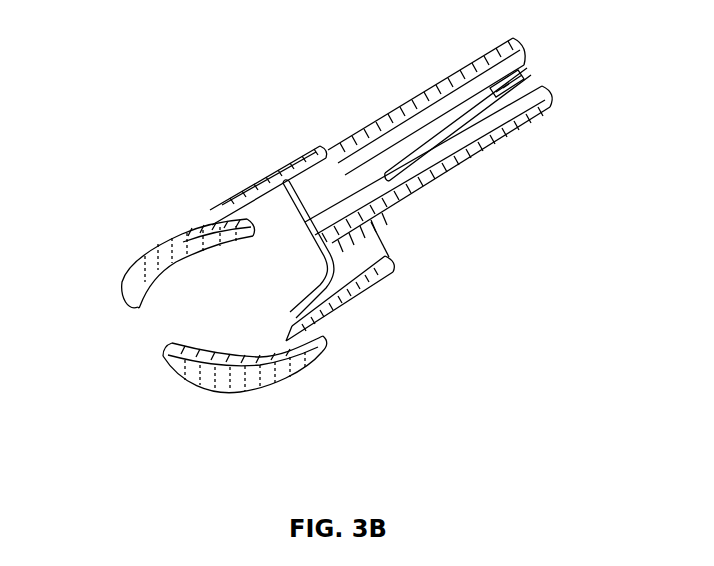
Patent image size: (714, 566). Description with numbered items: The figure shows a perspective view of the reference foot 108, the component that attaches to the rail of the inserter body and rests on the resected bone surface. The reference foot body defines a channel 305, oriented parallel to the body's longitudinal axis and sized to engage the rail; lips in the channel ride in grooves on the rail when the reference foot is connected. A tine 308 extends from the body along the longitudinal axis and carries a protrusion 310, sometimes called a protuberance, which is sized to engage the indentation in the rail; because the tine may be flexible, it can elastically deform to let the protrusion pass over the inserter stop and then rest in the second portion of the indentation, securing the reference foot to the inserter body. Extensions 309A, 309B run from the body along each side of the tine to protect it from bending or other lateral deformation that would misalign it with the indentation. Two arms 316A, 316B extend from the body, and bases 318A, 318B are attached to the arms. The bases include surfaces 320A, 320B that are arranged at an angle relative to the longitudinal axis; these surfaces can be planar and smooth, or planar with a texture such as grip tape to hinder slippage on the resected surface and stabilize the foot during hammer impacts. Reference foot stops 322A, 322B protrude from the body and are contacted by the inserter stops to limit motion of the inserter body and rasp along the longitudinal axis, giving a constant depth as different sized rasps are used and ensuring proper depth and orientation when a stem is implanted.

The reference foot 108 is at (229, 43).
The channel 305 is at (310, 213).
The tine 308 is at (395, 162).
The extension 309A is at (492, 143).
The extension 309B is at (460, 70).
The protrusion 310 is at (523, 73).
The arm 316A is at (338, 312).
The arm 316B is at (248, 193).
The base 318A is at (234, 382).
The base 318B is at (150, 263).
The surface 320A is at (200, 378).
The surface 320B is at (126, 288).
The reference foot stop 322A is at (396, 268).
The reference foot stop 322B is at (316, 152).